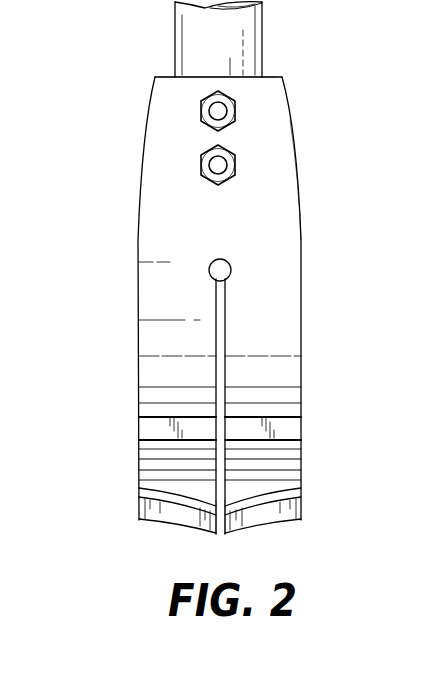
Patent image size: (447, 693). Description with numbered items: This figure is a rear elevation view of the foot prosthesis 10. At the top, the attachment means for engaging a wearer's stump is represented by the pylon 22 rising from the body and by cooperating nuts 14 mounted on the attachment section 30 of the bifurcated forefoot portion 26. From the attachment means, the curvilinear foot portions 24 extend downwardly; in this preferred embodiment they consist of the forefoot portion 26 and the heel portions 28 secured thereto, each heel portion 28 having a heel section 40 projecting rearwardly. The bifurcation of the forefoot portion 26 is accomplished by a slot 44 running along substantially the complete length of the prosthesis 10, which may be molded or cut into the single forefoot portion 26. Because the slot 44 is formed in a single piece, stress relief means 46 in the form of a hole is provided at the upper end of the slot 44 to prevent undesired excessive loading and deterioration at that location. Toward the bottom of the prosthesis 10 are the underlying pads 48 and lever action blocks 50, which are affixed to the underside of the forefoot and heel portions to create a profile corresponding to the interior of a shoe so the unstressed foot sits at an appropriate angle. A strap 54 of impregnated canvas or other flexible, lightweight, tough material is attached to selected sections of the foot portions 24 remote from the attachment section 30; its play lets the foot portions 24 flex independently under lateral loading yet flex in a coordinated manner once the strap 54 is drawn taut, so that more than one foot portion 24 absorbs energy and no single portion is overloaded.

The foot prosthesis 10 is at (127, 200).
The pylon 22 is at (190, 37).
The nuts 14 is at (217, 165).
The attachment section 30 is at (279, 136).
The forefoot portion 26 is at (299, 193).
The stress relief means 46 is at (210, 264).
The slot 44 is at (222, 322).
The curvilinear foot portions 24 is at (139, 345).
The lever action blocks 50 is at (152, 432).
The heel portions 28 is at (139, 465).
The heel section 40 is at (156, 484).
The pads 48 is at (200, 525).
The strap 54 is at (210, 440).